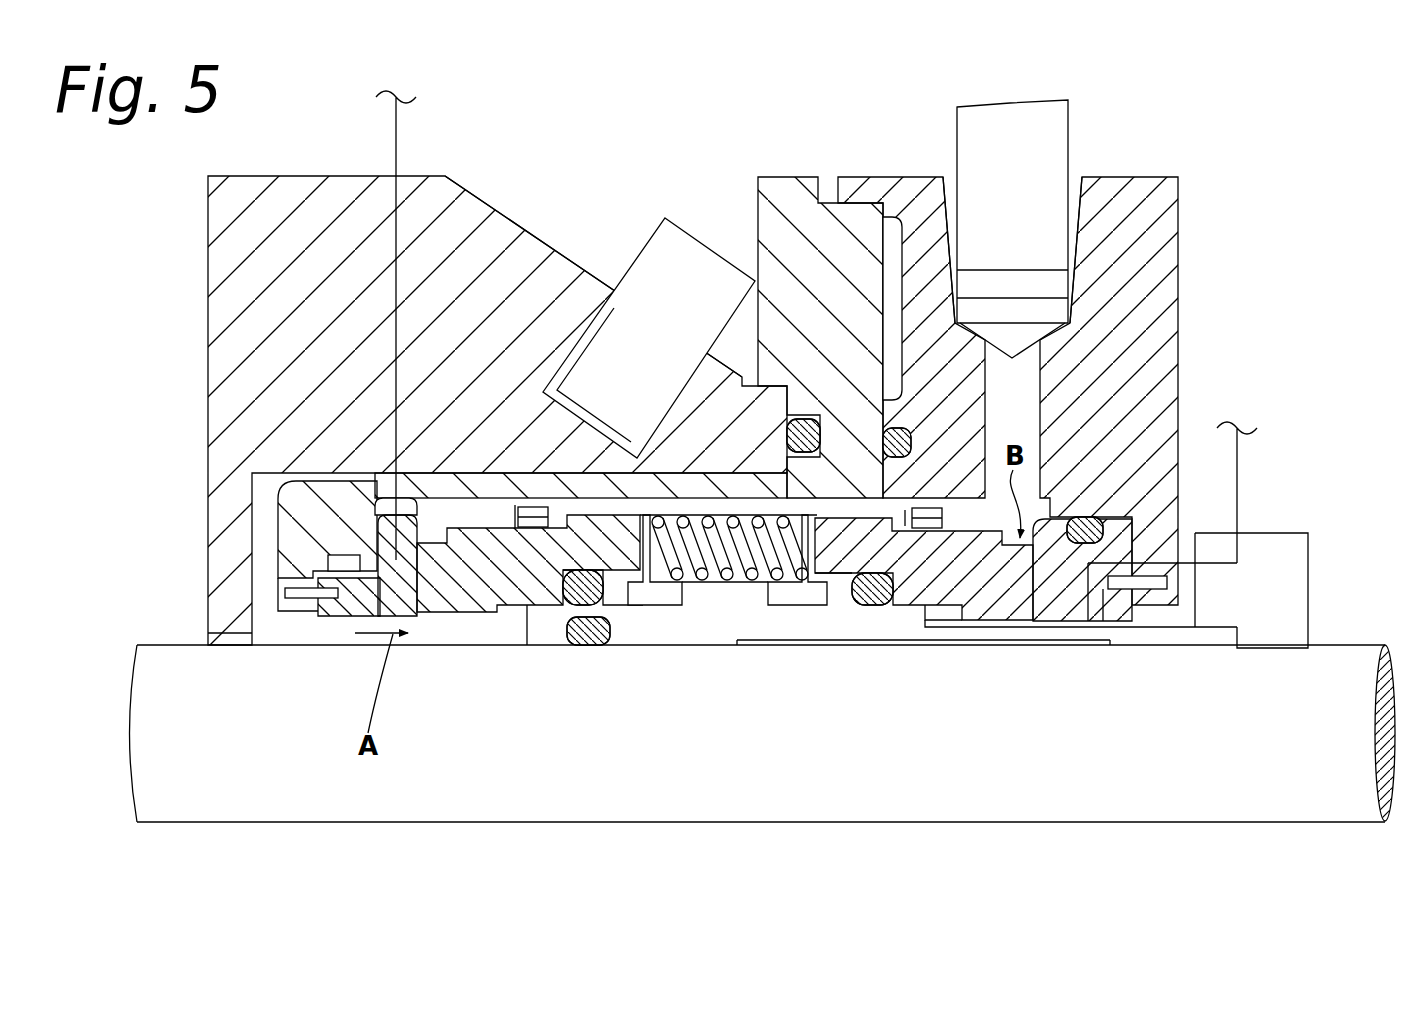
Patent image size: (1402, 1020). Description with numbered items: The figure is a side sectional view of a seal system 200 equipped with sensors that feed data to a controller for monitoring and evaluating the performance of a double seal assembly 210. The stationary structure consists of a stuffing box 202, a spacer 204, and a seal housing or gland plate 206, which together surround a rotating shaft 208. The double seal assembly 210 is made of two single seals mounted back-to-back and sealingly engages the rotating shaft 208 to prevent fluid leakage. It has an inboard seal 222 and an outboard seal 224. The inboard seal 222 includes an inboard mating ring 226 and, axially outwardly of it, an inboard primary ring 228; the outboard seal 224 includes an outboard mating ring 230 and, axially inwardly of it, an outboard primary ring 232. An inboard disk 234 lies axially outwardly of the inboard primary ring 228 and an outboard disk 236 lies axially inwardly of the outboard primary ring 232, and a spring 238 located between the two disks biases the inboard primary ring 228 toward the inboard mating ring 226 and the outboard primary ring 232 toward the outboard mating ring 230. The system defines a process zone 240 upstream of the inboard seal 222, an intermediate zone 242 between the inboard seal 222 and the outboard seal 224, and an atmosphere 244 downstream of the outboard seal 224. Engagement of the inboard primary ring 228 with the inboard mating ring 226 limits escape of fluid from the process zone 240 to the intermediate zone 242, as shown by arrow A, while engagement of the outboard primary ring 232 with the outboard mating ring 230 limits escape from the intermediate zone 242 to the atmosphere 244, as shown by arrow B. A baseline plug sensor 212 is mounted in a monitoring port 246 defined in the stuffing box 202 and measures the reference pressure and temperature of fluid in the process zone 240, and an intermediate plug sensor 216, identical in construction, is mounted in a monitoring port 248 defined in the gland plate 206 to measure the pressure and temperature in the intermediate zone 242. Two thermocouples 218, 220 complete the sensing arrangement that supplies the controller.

The seal system 200 is at (1285, 211).
The stuffing box 202 is at (435, 190).
The spacer 204 is at (757, 177).
The gland plate 206 is at (1122, 185).
The rotating shaft 208 is at (1222, 797).
The double seal assembly 210 is at (903, 608).
The baseline plug sensor 212 is at (658, 270).
The intermediate plug sensor 216 is at (1052, 110).
The thermocouple 218 is at (385, 613).
The thermocouple 220 is at (1090, 574).
The inboard seal 222 is at (446, 616).
The outboard seal 224 is at (961, 628).
The inboard mating ring 226 is at (330, 613).
The inboard primary ring 228 is at (470, 600).
The outboard mating ring 230 is at (1115, 597).
The outboard primary ring 232 is at (1015, 606).
The inboard disk 234 is at (648, 590).
The outboard disk 236 is at (806, 590).
The spring 238 is at (702, 578).
The process zone 240 is at (297, 617).
The intermediate zone 242 is at (1023, 540).
The atmosphere 244 is at (1252, 568).
The monitoring port 246 is at (567, 345).
The monitoring port 248 is at (945, 178).